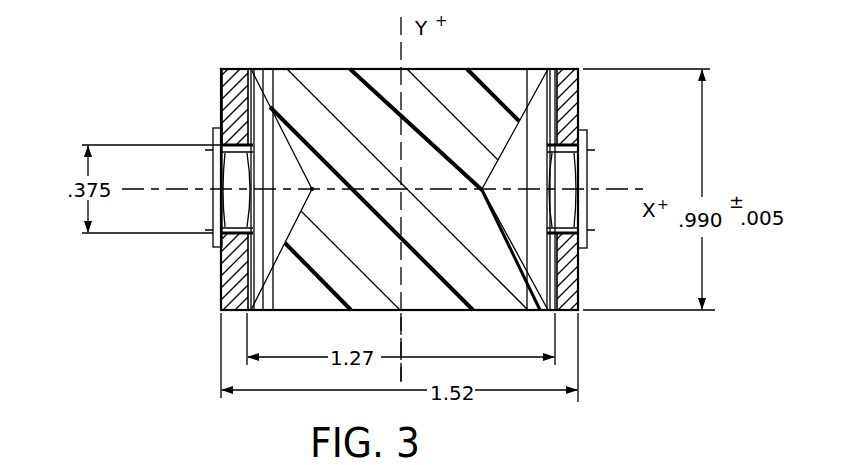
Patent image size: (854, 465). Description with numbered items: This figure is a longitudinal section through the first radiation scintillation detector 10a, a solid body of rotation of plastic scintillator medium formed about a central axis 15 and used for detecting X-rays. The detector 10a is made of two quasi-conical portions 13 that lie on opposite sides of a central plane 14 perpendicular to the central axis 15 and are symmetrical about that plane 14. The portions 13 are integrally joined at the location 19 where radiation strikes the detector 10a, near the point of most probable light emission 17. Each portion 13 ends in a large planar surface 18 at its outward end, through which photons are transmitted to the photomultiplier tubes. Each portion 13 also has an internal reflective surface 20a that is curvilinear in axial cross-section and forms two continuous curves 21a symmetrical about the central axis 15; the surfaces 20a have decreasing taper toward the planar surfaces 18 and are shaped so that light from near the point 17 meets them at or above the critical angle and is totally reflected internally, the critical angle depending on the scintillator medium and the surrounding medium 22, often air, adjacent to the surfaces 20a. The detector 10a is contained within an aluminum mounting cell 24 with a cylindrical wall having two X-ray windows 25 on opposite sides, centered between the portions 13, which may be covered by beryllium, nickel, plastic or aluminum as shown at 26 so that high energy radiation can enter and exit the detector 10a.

The radiation scintillation detector 10a is at (502, 63).
The quasi-conical portions 13 is at (277, 122).
The central plane 14 is at (641, 192).
The central axis 15 is at (402, 337).
The point of most probable light emission 17 is at (373, 160).
The large planar surfaces 18 is at (327, 68).
The location where the radiation strikes the detector 19 is at (312, 188).
The internal reflective surface 20a is at (307, 157).
The continuous curves 21a is at (289, 136).
The surrounding medium 22 is at (318, 204).
The mounting cell 24 is at (221, 288).
The X-ray windows 25 is at (233, 167).
The window covering 26 is at (214, 222).